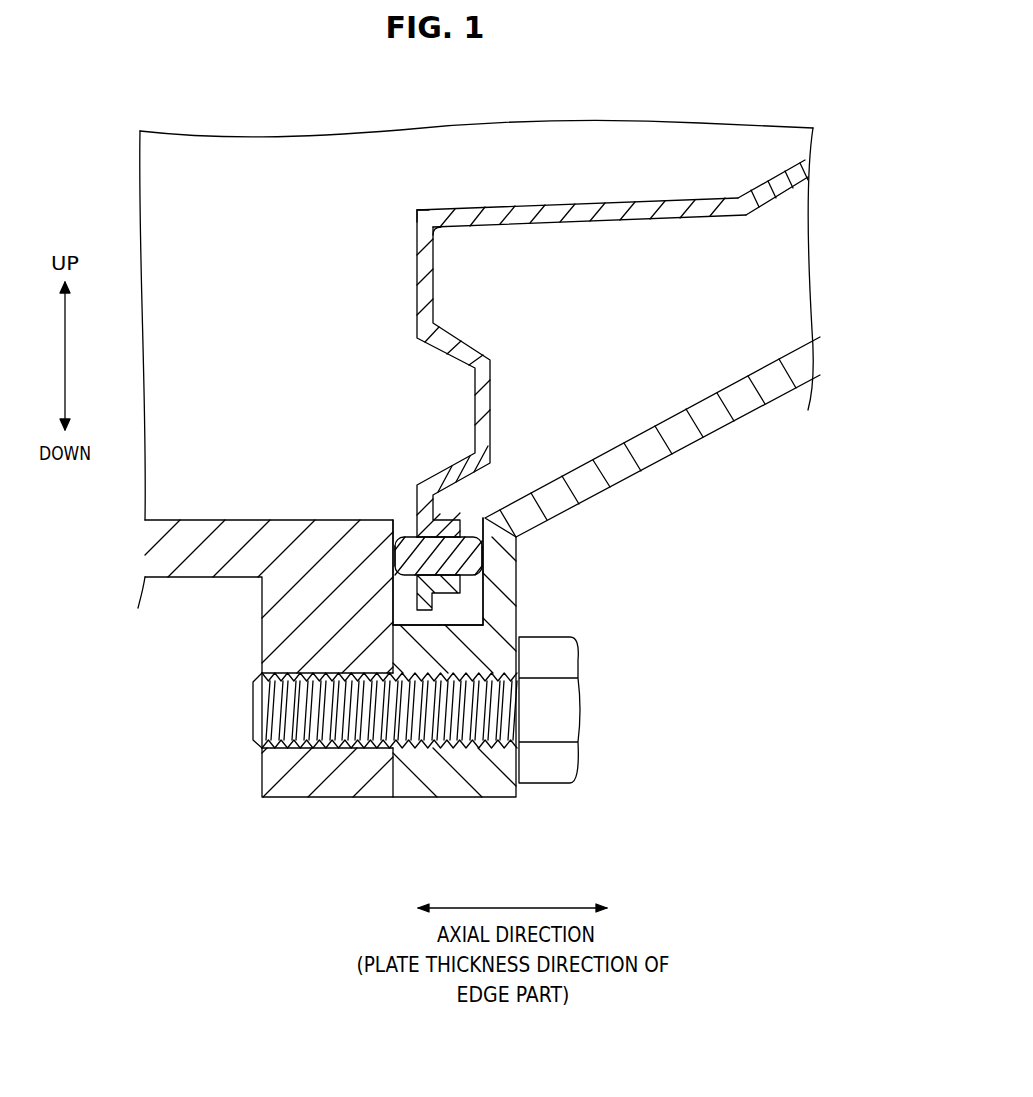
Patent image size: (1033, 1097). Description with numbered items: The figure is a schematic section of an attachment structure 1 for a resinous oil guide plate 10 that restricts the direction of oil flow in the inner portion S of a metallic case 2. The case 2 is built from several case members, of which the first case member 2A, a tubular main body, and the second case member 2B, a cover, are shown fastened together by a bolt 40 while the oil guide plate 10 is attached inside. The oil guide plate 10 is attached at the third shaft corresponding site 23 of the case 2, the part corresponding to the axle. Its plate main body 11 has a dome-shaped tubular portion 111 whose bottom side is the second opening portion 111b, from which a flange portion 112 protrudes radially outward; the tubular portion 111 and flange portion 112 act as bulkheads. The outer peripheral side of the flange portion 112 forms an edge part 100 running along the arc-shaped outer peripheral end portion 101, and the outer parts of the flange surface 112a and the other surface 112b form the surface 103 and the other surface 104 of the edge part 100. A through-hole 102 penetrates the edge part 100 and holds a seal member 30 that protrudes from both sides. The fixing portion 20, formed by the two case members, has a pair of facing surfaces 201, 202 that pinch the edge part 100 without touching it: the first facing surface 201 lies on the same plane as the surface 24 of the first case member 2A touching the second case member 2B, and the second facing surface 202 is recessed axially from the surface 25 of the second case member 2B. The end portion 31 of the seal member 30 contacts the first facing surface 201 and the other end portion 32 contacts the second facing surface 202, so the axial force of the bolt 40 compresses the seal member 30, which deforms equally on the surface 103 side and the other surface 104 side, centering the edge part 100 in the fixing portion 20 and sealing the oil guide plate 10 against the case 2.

The attachment structure 1 is at (258, 163).
The oil guide plate 10 is at (593, 307).
The plate main body 11 is at (774, 197).
The tubular portion 111 is at (612, 203).
The second opening portion 111b is at (414, 208).
The flange portion 112 is at (424, 373).
The surface of the flange portion 112a is at (416, 274).
The other surface of the flange portion 112b is at (435, 287).
The inner portion S is at (613, 296).
The fixing portion 20 is at (647, 437).
The third shaft corresponding site 23 is at (681, 411).
The seal member 30 is at (463, 507).
The end portion of the seal member 31 is at (394, 546).
The other end portion of the seal member 32 is at (483, 560).
The case 2 is at (402, 697).
The first case member 2A is at (287, 797).
The second case member 2B is at (498, 797).
The surface of the first case member 24 is at (405, 785).
The surface of the second case member 25 is at (384, 766).
The bolt 40 is at (566, 663).
The edge part 100 is at (410, 597).
The outer peripheral end portion 101 is at (393, 647).
The through-hole 102 is at (485, 548).
The surface of the edge part 103 is at (412, 588).
The other surface of the edge part 104 is at (557, 598).
The first facing surface 201 is at (396, 608).
The second facing surface 202 is at (478, 596).